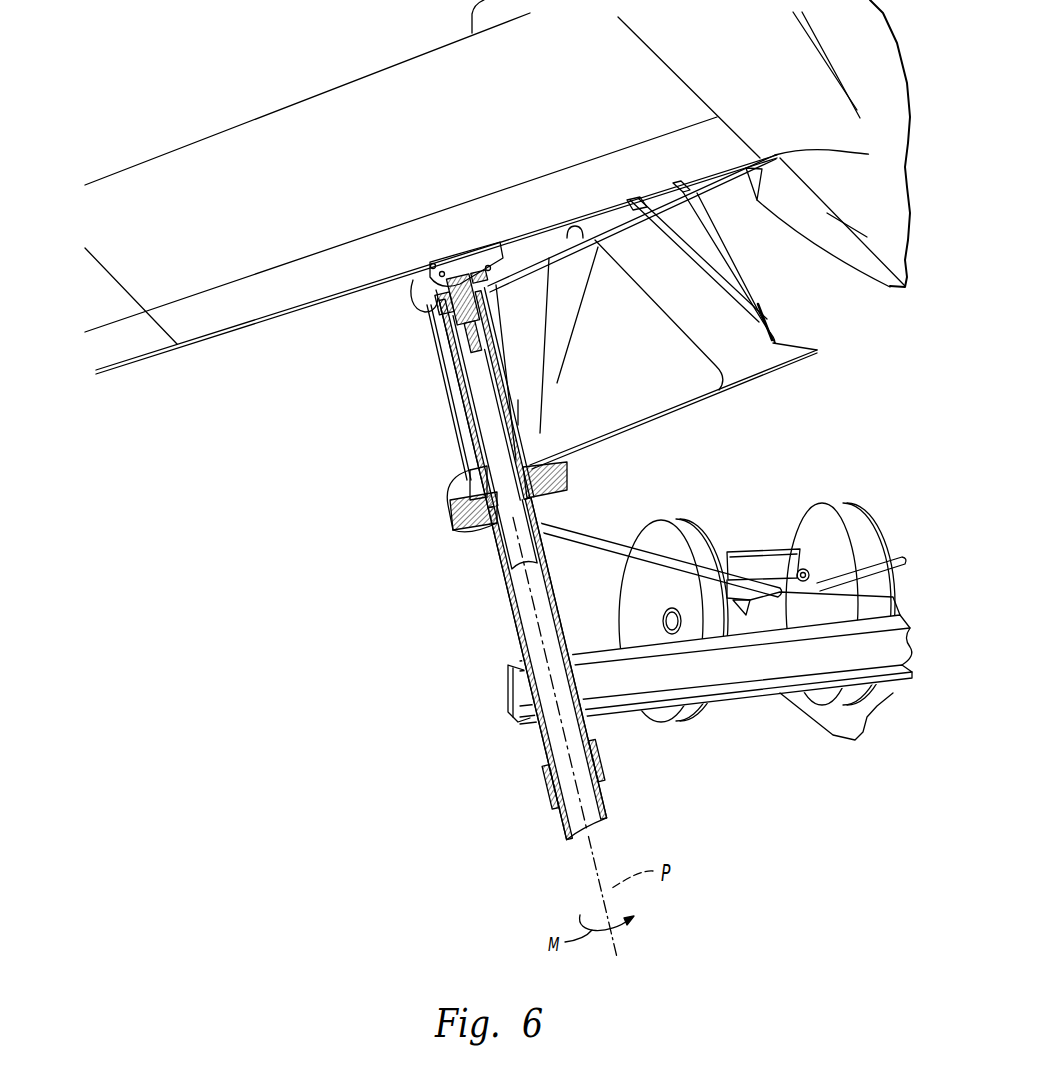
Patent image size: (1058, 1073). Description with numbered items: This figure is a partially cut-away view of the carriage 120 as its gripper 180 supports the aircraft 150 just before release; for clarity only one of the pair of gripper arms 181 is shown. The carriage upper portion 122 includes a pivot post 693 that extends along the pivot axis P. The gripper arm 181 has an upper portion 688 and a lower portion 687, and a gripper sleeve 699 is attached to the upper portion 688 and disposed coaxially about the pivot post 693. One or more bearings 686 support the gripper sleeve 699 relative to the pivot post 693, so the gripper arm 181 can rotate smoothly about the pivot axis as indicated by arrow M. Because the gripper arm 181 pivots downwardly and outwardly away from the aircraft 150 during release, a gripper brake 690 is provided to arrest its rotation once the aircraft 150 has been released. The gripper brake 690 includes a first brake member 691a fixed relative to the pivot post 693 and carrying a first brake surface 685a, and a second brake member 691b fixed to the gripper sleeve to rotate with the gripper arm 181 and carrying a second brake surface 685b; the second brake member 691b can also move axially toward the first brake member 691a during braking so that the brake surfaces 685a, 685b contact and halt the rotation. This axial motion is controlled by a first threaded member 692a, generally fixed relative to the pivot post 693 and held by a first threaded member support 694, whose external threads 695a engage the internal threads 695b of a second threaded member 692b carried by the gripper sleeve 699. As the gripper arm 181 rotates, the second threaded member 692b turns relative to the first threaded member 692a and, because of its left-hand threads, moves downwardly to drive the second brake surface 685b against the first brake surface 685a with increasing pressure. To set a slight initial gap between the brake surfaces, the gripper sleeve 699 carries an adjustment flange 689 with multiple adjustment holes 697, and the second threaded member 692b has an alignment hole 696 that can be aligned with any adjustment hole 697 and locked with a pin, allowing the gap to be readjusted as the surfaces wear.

The carriage 120 is at (710, 640).
The upper portion of the carriage 122 is at (757, 550).
The aircraft 150 is at (837, 238).
The gripper 180 is at (500, 550).
The gripper arm 181 is at (760, 365).
The first brake surface 685a is at (457, 530).
The second brake surface 685b is at (450, 515).
The bearing 686 is at (477, 478).
The lower portion of the gripper arm 687 is at (517, 420).
The upper portion of the gripper arm 688 is at (584, 245).
The adjustment flange 689 is at (415, 305).
The gripper brake 690 is at (419, 553).
The first brake member 691a is at (467, 535).
The second brake member 691b is at (447, 495).
The first threaded member 692a is at (450, 334).
The second threaded member 692b is at (512, 248).
The pivot post 693 is at (535, 611).
The first threaded member support 694 is at (474, 401).
The external threads 695a is at (495, 397).
The internal threads 695b is at (474, 348).
The alignment hole 696 is at (487, 345).
The adjustment holes 697 is at (462, 358).
The gripper sleeve 699 is at (486, 398).